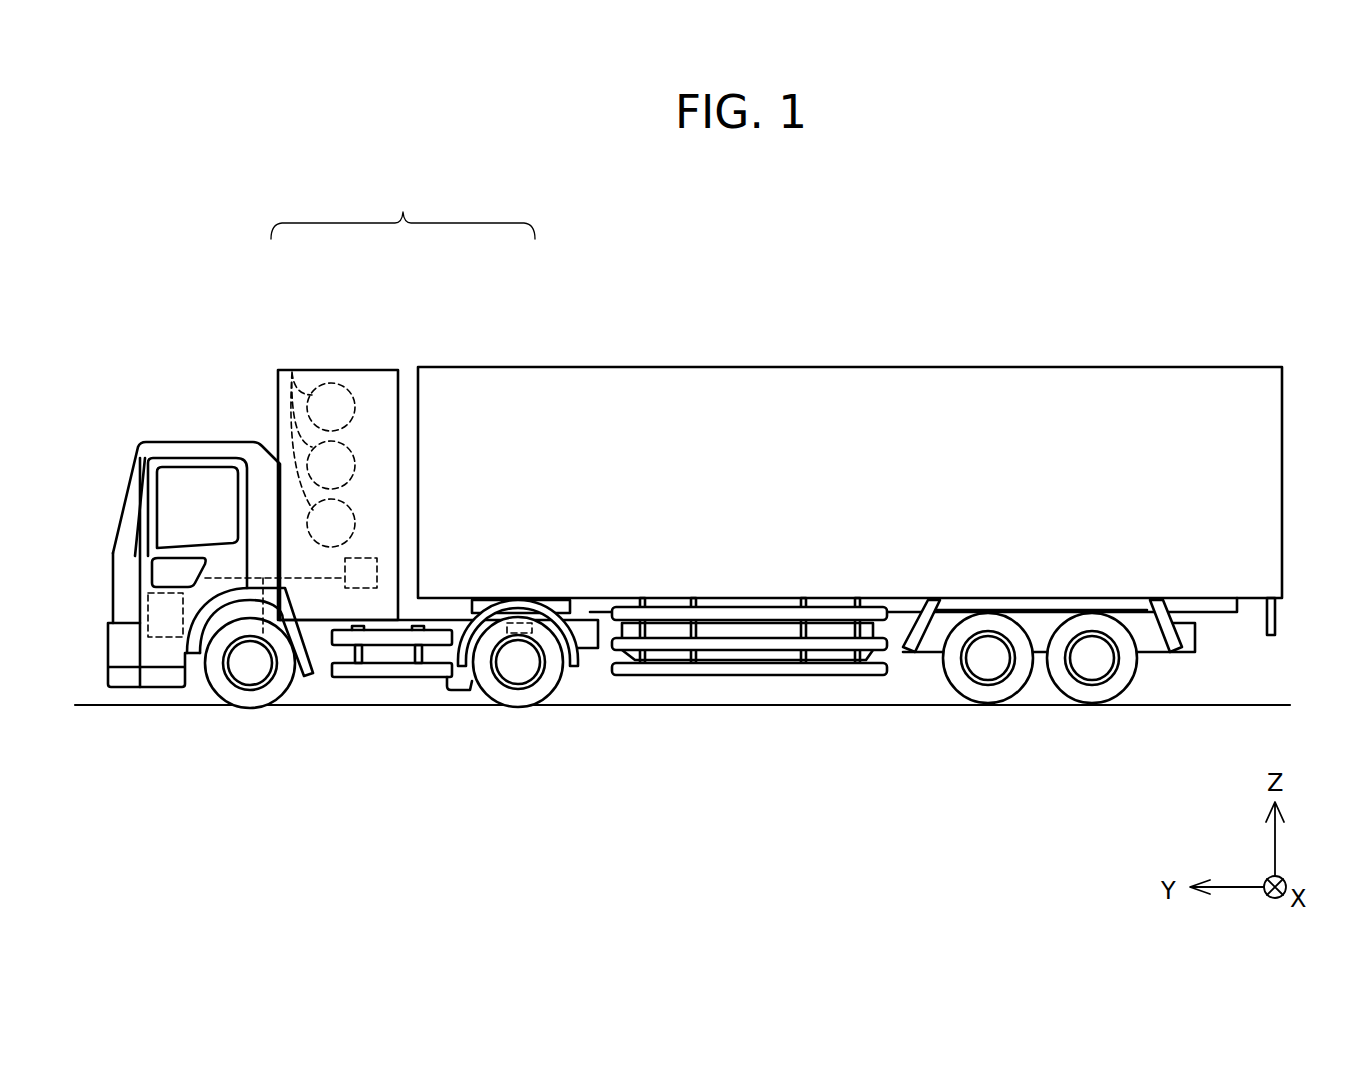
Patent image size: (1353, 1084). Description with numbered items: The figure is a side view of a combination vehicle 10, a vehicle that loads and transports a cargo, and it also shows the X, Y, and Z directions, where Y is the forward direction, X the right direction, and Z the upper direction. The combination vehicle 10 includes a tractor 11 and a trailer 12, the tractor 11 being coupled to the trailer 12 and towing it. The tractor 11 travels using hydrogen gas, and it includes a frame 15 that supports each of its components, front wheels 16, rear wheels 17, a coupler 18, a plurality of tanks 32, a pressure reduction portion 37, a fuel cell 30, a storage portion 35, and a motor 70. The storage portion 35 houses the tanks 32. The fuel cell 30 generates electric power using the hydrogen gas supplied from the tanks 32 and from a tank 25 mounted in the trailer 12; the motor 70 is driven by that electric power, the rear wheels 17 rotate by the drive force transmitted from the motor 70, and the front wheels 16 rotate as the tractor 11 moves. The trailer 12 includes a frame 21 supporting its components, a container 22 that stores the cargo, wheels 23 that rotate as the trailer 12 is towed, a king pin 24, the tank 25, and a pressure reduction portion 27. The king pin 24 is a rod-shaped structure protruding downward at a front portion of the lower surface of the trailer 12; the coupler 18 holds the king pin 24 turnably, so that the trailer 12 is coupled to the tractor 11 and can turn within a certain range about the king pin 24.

The combination vehicle 10 is at (403, 209).
The tractor 11 is at (353, 508).
The trailer 12 is at (850, 491).
The frame 15 is at (325, 642).
The front wheels 16 is at (257, 697).
The rear wheels 17 is at (523, 693).
The coupler 18 is at (467, 605).
The frame 21 is at (898, 638).
The container 22 is at (762, 366).
The wheels 23 is at (1088, 695).
The king pin 24 is at (500, 624).
The tank 25 is at (735, 655).
The pressure reduction portion 27 is at (516, 640).
The fuel cell 30 is at (218, 578).
The tanks 32 is at (292, 369).
The storage portion 35 is at (332, 369).
The pressure reduction portion 37 is at (362, 556).
The motor 70 is at (158, 640).